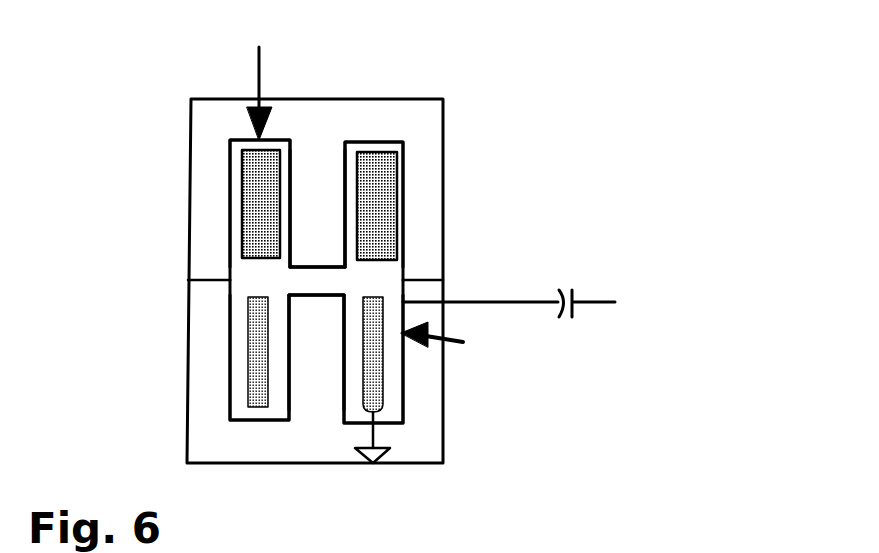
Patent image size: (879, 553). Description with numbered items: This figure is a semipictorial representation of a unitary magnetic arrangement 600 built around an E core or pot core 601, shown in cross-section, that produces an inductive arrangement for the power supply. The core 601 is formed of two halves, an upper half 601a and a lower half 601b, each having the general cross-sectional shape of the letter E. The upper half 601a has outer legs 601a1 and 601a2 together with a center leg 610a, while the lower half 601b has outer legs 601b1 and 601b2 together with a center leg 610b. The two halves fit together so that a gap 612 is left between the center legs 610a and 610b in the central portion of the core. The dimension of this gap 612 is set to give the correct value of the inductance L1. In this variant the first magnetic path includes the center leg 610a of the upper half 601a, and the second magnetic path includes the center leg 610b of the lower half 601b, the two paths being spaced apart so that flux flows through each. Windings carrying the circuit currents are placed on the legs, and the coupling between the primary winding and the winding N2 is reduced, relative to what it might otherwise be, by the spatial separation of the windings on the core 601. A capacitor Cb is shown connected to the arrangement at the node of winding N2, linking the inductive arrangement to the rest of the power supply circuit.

The unitary magnetic arrangement 600 is at (405, 89).
The magnetic core 601 is at (112, 213).
The upper half 601a is at (191, 148).
The outer leg 601a1 is at (210, 255).
The outer leg 601a2 is at (430, 252).
The center leg 610a is at (328, 235).
The gap 612 is at (342, 292).
The lower half 601b is at (278, 468).
The outer leg 601b1 is at (208, 353).
The outer leg 601b2 is at (428, 357).
The center leg 610b is at (342, 362).
The inductance L1 is at (269, 78).
The capacitor Cb is at (509, 285).
The winding N2 is at (459, 344).